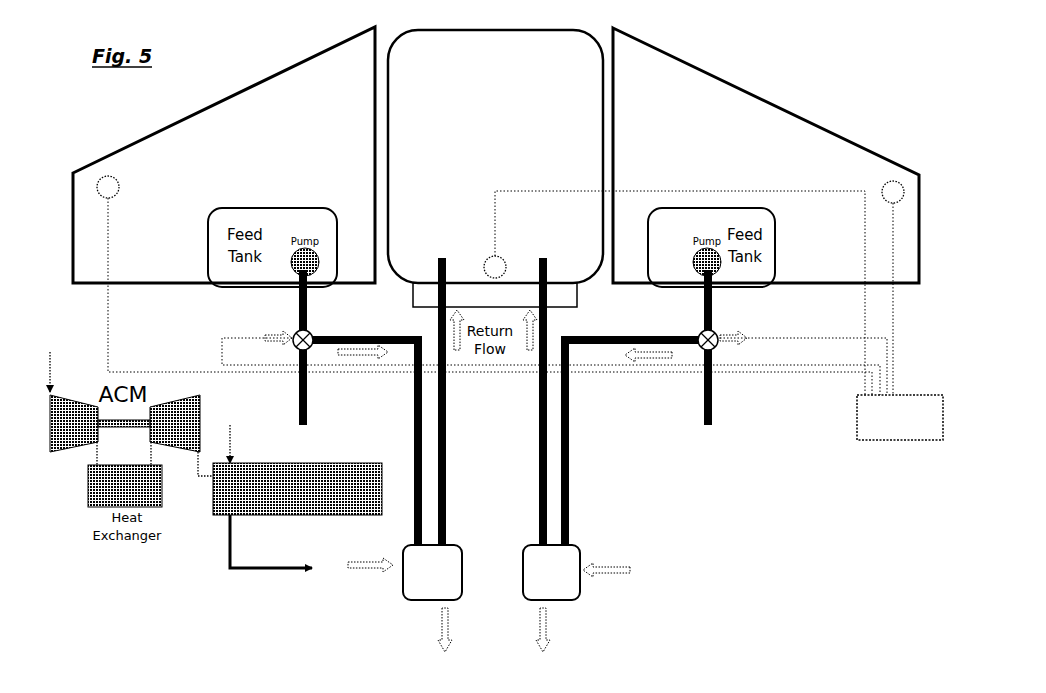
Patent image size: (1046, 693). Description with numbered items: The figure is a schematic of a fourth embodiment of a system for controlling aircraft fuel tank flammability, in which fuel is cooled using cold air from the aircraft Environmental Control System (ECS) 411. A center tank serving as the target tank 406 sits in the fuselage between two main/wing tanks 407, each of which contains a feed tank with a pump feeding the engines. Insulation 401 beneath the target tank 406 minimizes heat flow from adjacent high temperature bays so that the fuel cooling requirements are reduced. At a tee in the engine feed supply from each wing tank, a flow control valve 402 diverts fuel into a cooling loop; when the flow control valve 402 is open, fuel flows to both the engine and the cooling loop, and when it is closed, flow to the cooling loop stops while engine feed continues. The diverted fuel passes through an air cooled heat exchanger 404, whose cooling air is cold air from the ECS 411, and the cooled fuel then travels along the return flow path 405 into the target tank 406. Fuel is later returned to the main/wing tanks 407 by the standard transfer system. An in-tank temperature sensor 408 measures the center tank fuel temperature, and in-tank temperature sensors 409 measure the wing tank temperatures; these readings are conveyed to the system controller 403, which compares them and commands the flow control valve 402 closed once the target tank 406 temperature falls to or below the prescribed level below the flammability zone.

The insulation 401 is at (512, 295).
The flow control valve 402 is at (504, 325).
The system controller 403 is at (900, 430).
The air cooled heat exchanger 404 is at (492, 579).
The return flow path 405 is at (463, 401).
The target tank 406 is at (495, 156).
The main/wing tanks 407 is at (496, 155).
The in-tank temperature sensor 408 is at (497, 259).
The in-tank temperature sensors 409 is at (500, 185).
The Environmental Control System (ECS) 411 is at (297, 511).